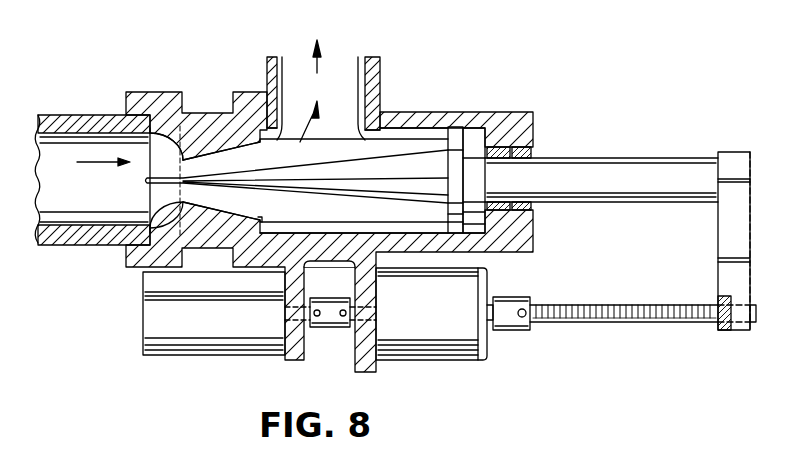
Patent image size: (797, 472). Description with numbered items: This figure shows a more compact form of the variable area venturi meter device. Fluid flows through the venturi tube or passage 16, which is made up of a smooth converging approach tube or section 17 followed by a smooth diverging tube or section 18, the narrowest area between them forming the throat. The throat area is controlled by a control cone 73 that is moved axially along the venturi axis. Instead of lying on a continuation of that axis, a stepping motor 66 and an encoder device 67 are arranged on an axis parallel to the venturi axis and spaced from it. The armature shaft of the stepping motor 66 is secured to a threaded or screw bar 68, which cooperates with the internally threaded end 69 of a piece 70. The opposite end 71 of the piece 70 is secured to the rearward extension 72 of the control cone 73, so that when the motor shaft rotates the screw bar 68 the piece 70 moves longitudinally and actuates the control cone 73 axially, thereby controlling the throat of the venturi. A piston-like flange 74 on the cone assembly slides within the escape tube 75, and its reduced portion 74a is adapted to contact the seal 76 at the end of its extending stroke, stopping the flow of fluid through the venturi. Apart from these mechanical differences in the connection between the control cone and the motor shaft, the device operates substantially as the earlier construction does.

The venturi tube or passage 16 is at (213, 162).
The converging approach tube or section 17 is at (167, 150).
The diverging tube or section 18 is at (250, 137).
The stepping motor 66 is at (430, 353).
The encoder device 67 is at (197, 347).
The threaded or screw bar 68 is at (565, 305).
The internally threaded end 69 is at (716, 300).
The piece 70 is at (742, 212).
The opposite end 71 is at (735, 156).
The rearward extension 72 is at (624, 166).
The control cone 73 is at (393, 158).
The piston-like flange 74 is at (512, 150).
The reduced portion 74a is at (478, 140).
The escape tube 75 is at (455, 140).
The seal 76 is at (262, 217).